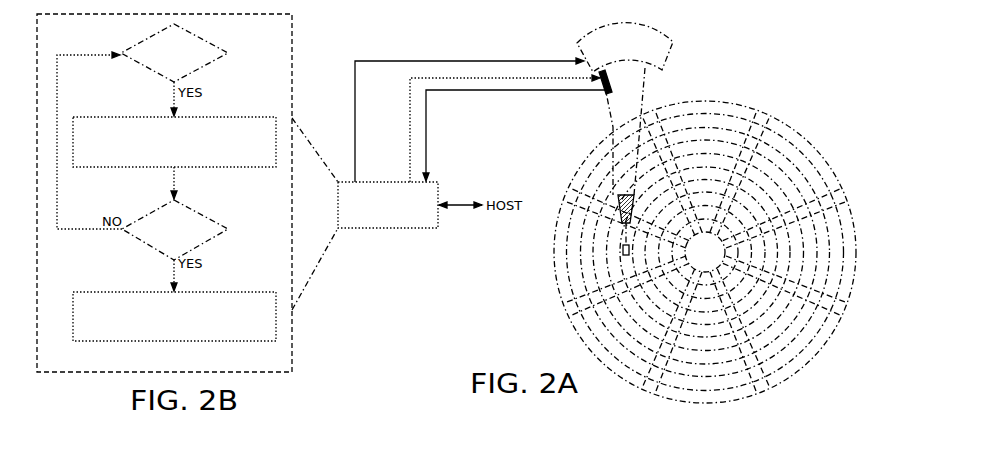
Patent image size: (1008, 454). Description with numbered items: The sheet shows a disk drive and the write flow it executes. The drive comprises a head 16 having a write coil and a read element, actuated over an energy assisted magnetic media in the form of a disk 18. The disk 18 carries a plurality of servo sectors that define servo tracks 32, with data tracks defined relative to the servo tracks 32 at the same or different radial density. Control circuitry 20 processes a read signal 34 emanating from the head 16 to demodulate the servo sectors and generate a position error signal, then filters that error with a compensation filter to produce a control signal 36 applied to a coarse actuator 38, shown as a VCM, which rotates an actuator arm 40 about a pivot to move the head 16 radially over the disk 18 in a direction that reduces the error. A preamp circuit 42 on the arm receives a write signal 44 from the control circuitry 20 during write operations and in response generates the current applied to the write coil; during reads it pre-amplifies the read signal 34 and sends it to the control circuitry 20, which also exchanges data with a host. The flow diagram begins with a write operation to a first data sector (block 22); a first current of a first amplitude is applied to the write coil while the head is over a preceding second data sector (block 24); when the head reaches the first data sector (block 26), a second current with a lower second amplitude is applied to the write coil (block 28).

In FIG. 2A, the head 16 is at (621, 253).
In FIG. 2A, the disk 18 is at (811, 136).
In FIG. 2A, the control circuitry 20 is at (387, 228).
In FIG. 2B, the write operation block 22 is at (213, 70).
In FIG. 2B, the first current block 24 is at (243, 170).
In FIG. 2B, the first data sector reached block 26 is at (212, 245).
In FIG. 2B, the second current block 28 is at (243, 343).
In FIG. 2A, the servo track 32 is at (704, 110).
In FIG. 2A, the read signal 34 is at (430, 125).
In FIG. 2A, the control signal 36 is at (353, 101).
In FIG. 2A, the coarse actuator 38 is at (674, 44).
In FIG. 2A, the actuator arm 40 is at (611, 122).
In FIG. 2A, the preamp circuit 42 is at (603, 95).
In FIG. 2A, the write signal 44 is at (408, 125).